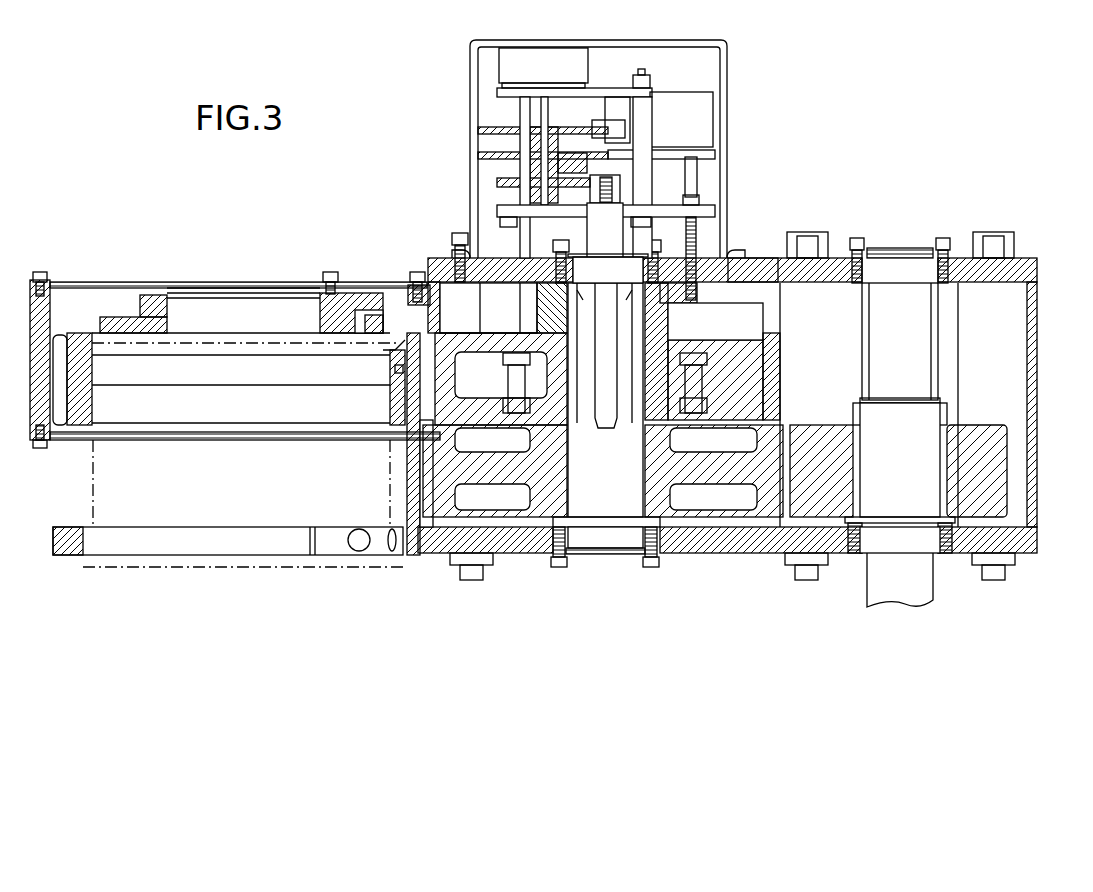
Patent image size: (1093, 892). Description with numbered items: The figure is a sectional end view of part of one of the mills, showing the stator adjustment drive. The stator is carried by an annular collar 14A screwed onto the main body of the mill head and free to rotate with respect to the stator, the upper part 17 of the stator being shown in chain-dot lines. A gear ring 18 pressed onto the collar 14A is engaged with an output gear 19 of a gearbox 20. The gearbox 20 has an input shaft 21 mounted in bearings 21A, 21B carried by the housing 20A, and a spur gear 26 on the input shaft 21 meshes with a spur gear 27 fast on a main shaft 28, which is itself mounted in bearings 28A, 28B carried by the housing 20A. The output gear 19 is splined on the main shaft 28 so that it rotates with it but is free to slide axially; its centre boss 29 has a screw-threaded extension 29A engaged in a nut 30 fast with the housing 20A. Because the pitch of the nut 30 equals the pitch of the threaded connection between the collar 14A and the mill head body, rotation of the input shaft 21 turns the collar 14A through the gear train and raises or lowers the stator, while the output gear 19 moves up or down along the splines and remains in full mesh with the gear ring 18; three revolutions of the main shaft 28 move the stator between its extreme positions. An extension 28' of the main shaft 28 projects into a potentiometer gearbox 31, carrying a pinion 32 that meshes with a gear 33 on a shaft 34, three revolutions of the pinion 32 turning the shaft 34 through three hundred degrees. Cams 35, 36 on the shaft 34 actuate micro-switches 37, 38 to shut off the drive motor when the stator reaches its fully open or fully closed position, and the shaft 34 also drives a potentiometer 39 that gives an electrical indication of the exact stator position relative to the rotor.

The annular collar 14A is at (92, 333).
The upper part of the stator 17 is at (394, 352).
The gear ring 18 is at (60, 345).
The output gear 19 is at (458, 345).
The gearbox 20 is at (430, 252).
The housing 20A is at (781, 258).
The input shaft 21 is at (868, 590).
The bearing 21A is at (880, 262).
The bearing 21B is at (928, 540).
The spur gear 26 is at (995, 430).
The spur gear 27 is at (785, 487).
The main shaft 28 is at (605, 400).
The extension of the shaft 28' is at (578, 230).
The bearing 28A is at (640, 266).
The bearing 28B is at (642, 540).
The centre boss 29 is at (657, 357).
The screw-threaded extension 29A is at (660, 322).
The nut 30 is at (697, 292).
The potentiometer gearbox 31 is at (742, 74).
The pinion 32 is at (618, 186).
The gear 33 is at (497, 183).
The shaft 34 is at (540, 108).
The cam 35 is at (480, 130).
The cam 36 is at (480, 156).
The micro-switch 37 is at (689, 129).
The micro-switch 38 is at (697, 180).
The potentiometer 39 is at (556, 76).